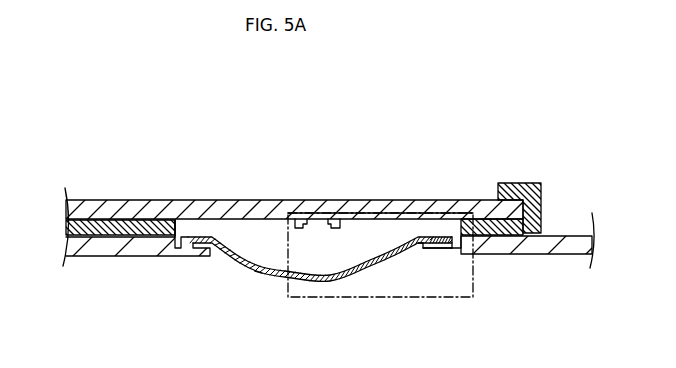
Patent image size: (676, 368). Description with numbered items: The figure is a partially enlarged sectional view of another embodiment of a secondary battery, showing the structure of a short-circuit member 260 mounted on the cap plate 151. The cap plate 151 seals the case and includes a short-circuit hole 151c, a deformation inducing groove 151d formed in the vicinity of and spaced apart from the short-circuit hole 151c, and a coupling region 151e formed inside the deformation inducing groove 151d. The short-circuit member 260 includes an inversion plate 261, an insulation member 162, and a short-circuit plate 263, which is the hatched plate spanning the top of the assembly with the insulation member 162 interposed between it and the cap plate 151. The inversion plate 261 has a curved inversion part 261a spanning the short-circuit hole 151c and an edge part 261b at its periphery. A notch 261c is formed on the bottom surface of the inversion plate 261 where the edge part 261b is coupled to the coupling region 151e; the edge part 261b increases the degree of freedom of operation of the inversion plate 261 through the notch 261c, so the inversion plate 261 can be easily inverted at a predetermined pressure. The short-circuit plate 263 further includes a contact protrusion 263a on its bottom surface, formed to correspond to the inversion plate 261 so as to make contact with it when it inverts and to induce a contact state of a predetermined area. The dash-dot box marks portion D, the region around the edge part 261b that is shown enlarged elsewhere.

The short-circuit member 260 is at (478, 126).
The insulation member 162 is at (129, 230).
The short-circuit plate 263 is at (185, 194).
The contact protrusion 263a is at (298, 241).
The portion D is at (334, 212).
The short-circuit hole 151c is at (417, 250).
The edge part 261b is at (426, 239).
The inversion plate 261 is at (228, 277).
The inversion part 261a is at (262, 279).
The notch 261c is at (424, 250).
The coupling region 151e is at (436, 252).
The deformation inducing groove 151d is at (459, 250).
The cap plate 151 is at (563, 255).